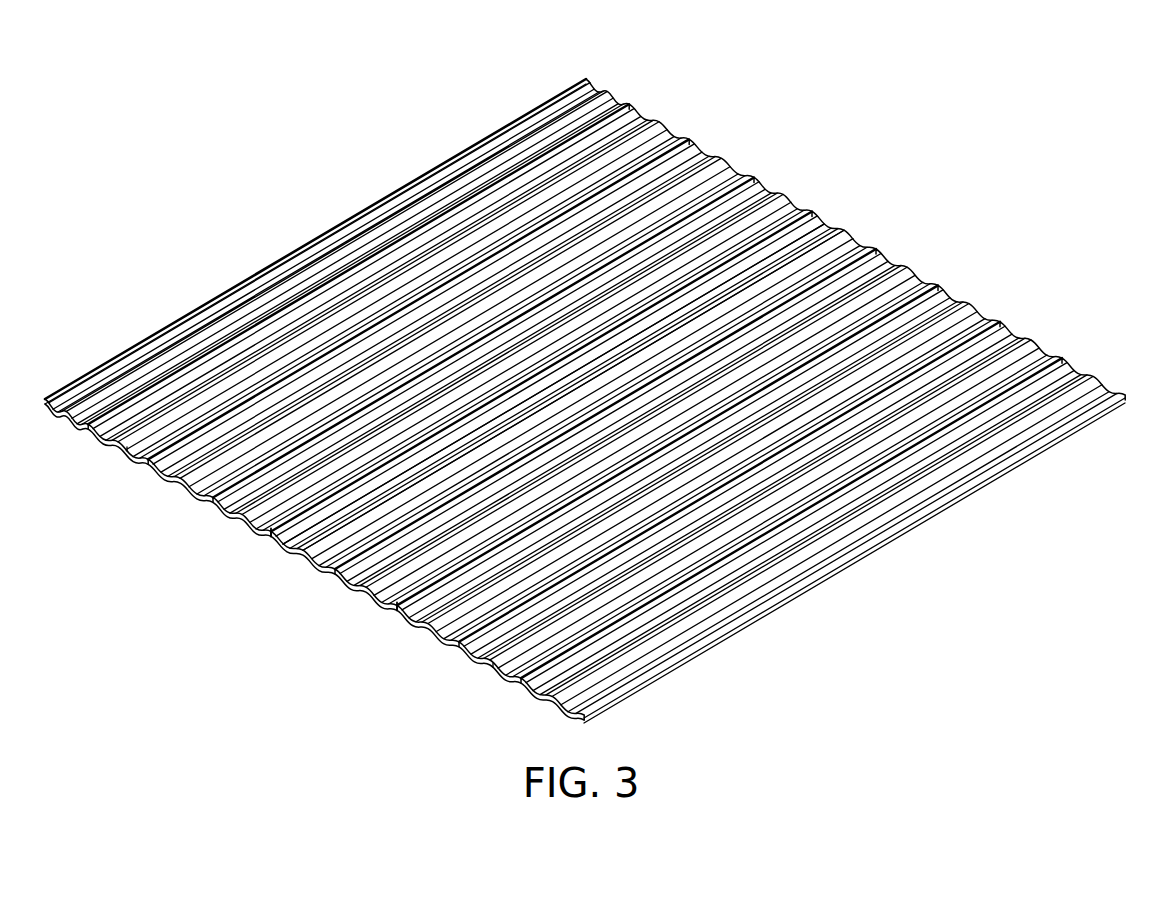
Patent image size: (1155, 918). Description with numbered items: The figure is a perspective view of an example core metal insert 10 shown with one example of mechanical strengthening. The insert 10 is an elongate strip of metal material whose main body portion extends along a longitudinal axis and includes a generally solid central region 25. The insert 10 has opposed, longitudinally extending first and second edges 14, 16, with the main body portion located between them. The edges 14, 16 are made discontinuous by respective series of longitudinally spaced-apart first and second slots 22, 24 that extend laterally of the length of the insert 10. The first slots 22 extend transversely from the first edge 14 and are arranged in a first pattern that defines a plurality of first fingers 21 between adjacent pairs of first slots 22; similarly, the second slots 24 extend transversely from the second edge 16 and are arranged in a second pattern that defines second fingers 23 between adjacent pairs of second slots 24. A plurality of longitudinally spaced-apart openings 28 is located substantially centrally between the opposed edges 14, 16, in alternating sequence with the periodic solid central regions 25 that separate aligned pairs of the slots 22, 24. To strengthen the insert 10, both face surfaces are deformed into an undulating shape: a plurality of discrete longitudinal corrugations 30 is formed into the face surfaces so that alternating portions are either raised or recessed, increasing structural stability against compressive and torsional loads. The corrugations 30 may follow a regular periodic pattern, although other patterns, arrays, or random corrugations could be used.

The core metal insert 10 is at (222, 157).
The first edge 14 is at (978, 287).
The second edge 16 is at (135, 548).
The first fingers 21 is at (647, 114).
The first slots 22 is at (757, 173).
The second fingers 23 is at (127, 450).
The second slots 24 is at (268, 540).
The solid central region 25 is at (347, 273).
The openings 28 is at (483, 290).
The longitudinal corrugations 30 is at (143, 352).